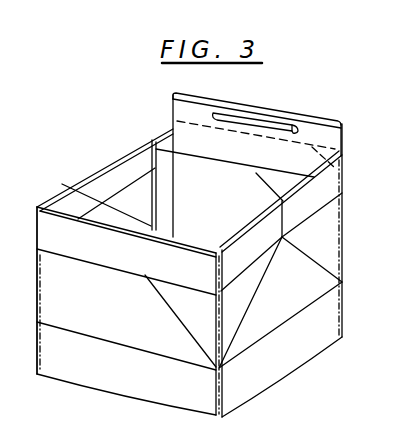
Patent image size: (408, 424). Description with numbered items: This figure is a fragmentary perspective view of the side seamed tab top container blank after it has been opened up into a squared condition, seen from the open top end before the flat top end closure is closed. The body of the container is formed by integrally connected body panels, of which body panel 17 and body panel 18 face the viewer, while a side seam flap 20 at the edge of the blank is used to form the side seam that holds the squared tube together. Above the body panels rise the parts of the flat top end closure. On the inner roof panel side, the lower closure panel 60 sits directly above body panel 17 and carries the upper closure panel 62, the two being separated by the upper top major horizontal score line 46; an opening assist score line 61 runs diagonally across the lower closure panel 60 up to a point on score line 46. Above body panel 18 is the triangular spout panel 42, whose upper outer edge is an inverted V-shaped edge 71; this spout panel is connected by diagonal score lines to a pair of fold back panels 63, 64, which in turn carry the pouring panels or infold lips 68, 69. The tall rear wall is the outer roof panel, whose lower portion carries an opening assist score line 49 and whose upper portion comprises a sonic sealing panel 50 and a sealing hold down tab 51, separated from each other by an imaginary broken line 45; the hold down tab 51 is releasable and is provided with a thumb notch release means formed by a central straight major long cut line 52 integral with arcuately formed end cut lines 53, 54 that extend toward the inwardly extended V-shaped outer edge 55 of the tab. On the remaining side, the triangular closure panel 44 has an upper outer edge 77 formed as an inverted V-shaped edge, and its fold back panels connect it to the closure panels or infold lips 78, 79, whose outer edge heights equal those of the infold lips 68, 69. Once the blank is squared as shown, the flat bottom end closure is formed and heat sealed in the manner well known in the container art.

The body panel 17 is at (126, 368).
The body panel 18 is at (280, 349).
The side seam flap 20 is at (167, 147).
The triangular spout panel 42 is at (303, 276).
The triangular closure panel 44 is at (113, 210).
The broken line 45 is at (337, 170).
The upper top major horizontal score line 46 is at (188, 155).
The opening assist score line 49 is at (276, 193).
The sonic sealing panel 50 is at (257, 131).
The sealing hold down tab 51 is at (172, 107).
The central straight major long cut line 52 is at (259, 127).
The end cut line 53 is at (344, 127).
The end cut line 54 is at (213, 114).
The inwardly extended V-shaped outer edge 55 is at (290, 116).
The lower closure panel 60 is at (126, 309).
The opening assist score line 61 is at (182, 327).
The upper closure panel 62 is at (126, 311).
The fold back panel 63 is at (333, 248).
The fold back panel 64 is at (251, 305).
The pouring panel or infold lip 68 is at (281, 201).
The pouring panel or infold lip 69 is at (257, 232).
The inverted V-shaped edge 71 is at (231, 244).
The upper outer edge of the closure panel 77 is at (123, 155).
The closure panel or infold lip 78 is at (80, 200).
The closure panel or infold lip 79 is at (140, 157).